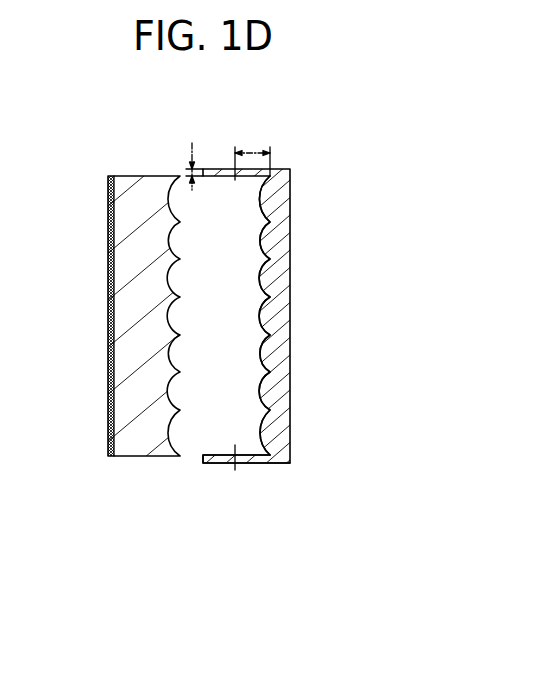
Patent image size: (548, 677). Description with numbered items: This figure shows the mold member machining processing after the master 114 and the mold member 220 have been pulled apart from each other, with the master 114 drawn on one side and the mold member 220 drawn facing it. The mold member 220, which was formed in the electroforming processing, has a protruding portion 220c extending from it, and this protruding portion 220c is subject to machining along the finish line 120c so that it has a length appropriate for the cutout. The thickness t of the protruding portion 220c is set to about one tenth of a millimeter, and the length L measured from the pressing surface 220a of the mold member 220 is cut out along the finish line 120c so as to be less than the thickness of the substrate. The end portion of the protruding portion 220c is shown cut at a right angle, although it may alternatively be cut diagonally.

The master 114 is at (138, 458).
The finish line 120c is at (235, 168).
The mold member 220 is at (289, 389).
The pressing surface 220a is at (257, 464).
The protruding portion 220c is at (212, 464).